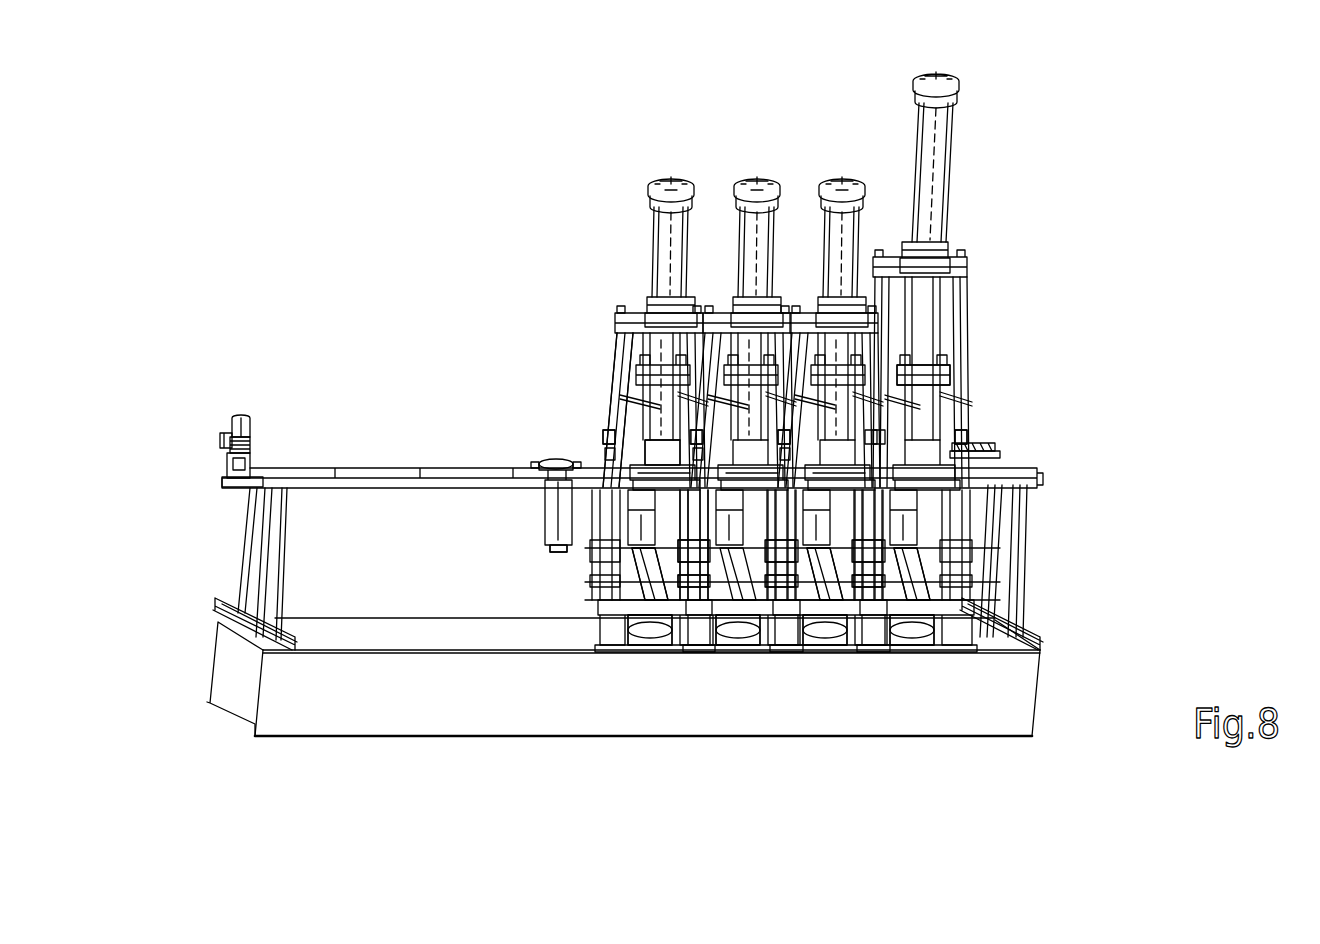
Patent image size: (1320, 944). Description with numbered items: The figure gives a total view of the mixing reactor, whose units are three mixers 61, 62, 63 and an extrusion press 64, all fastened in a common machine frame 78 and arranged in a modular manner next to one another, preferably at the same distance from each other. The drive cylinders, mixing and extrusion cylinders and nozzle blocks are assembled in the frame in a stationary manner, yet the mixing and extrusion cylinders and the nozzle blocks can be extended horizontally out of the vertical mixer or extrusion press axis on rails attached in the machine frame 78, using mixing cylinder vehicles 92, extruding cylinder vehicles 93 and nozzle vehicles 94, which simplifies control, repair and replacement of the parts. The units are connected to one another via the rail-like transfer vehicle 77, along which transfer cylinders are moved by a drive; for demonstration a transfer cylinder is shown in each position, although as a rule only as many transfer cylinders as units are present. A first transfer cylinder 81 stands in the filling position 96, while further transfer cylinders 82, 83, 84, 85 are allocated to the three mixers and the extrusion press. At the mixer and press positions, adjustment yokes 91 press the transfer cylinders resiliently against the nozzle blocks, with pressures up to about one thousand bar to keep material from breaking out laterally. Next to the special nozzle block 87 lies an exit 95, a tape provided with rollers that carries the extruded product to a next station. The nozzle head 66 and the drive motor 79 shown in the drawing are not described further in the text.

The mixer 61 is at (672, 150).
The mixer 62 is at (761, 142).
The mixer 63 is at (851, 140).
The extrusion press 64 is at (1004, 94).
The nozzle head 66 is at (633, 437).
The transfer vehicle 77 is at (370, 468).
The machine frame 78 is at (247, 667).
The drive motor 79 is at (235, 415).
The first transfer cylinder 81 is at (557, 552).
The transfer cylinder 82 is at (648, 600).
The transfer cylinder 83 is at (746, 592).
The transfer cylinder 84 is at (862, 622).
The transfer cylinder 85 is at (925, 567).
The special nozzle block 87 is at (980, 445).
The adjustment yoke 91 is at (648, 550).
The mixing cylinder vehicle 92 is at (620, 352).
The extruding cylinder vehicle 93 is at (950, 362).
The nozzle vehicle 94 is at (613, 437).
The exit 95 is at (990, 452).
The filling position 96 is at (548, 458).